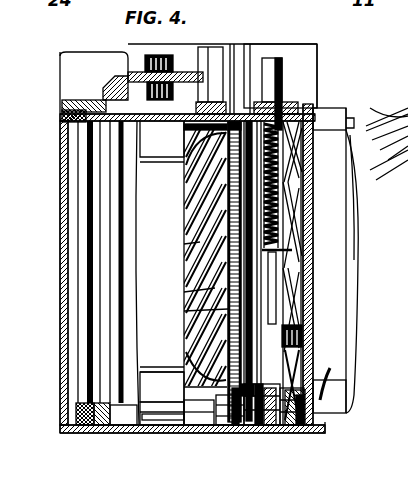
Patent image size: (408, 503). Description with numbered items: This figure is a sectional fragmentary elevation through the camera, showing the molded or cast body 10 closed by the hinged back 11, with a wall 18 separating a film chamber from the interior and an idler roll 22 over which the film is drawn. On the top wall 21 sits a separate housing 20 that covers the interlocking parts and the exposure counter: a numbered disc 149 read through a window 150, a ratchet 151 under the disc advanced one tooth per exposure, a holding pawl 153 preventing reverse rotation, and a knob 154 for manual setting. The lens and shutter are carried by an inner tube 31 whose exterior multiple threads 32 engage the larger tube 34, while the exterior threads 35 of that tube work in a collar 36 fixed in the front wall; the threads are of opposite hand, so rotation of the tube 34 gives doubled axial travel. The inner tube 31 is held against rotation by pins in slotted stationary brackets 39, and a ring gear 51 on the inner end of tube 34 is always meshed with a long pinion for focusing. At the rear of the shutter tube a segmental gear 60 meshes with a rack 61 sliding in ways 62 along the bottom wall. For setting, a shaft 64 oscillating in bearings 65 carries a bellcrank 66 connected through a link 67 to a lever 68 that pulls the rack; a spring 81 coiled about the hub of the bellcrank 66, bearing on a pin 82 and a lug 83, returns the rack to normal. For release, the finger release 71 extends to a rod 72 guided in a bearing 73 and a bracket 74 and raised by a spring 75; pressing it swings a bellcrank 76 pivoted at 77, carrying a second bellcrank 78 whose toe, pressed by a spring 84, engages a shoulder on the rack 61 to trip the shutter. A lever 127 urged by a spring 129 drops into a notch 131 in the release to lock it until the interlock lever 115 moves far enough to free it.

The body 10 is at (66, 430).
The back 11 is at (61, 236).
The wall 18 is at (136, 152).
The housing 20 is at (61, 85).
The top wall 21 is at (61, 121).
The idler roll 22 is at (92, 184).
The tube 31 is at (192, 243).
The multiple threads 32 is at (192, 265).
The tube 34 is at (353, 118).
The exterior threads 35 is at (355, 396).
The collar 36 is at (346, 108).
The stationary brackets 39 is at (148, 166).
The ring gear 51 is at (184, 311).
The segmental gear 60 is at (186, 395).
The rack 61 is at (279, 433).
The ways 62 is at (326, 428).
The shaft 64 is at (184, 292).
The bearings 65 is at (259, 433).
The bellcrank 66 is at (244, 433).
The link 67 is at (172, 433).
The lever 68 is at (156, 433).
The finger release 71 is at (280, 58).
The rod 72 is at (296, 292).
The bearing 73 is at (297, 100).
The bracket 74 is at (263, 251).
The spring 75 is at (283, 207).
The bellcrank 76 is at (313, 378).
The pivot 77 is at (302, 330).
The bellcrank 78 is at (306, 433).
The spring 81 is at (230, 433).
The pin 82 is at (195, 433).
The lug 83 is at (217, 433).
The spring 84 is at (303, 350).
The interlock lever 115 is at (231, 52).
The lever 127 is at (250, 50).
The spring 129 is at (162, 139).
The notch 131 is at (298, 96).
The numbered disc 149 is at (192, 76).
The window 150 is at (127, 52).
The ratchet 151 is at (124, 93).
The holding pawl 153 is at (214, 80).
The knob 154 is at (163, 48).